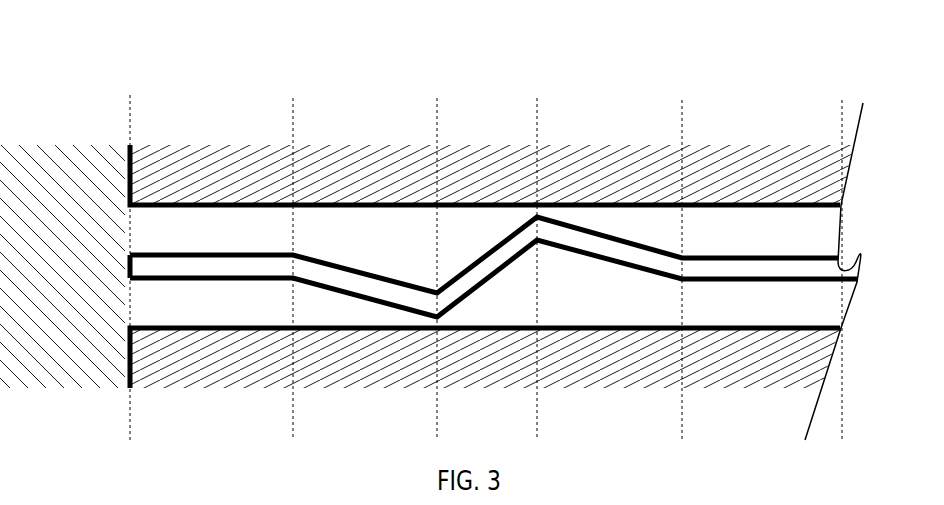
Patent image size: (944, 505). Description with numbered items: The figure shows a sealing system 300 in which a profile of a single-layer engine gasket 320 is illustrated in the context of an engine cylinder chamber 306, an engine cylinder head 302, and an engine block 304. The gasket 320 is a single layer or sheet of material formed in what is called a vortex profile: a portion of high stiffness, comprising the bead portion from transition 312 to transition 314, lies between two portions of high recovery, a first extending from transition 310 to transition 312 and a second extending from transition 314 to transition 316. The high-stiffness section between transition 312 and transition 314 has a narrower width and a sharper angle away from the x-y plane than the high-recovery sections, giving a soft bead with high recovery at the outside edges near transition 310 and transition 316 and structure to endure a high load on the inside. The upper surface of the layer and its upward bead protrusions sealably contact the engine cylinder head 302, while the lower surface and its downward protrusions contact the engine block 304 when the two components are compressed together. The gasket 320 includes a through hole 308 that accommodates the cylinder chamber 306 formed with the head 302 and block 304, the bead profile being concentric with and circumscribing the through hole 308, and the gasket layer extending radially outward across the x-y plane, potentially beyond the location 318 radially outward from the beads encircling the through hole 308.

The sealing system 300 is at (461, 234).
The engine cylinder head 302 is at (491, 147).
The engine block 304 is at (485, 388).
The engine cylinder chamber 306 is at (62, 239).
The through hole 308 is at (169, 257).
The transition 310 is at (332, 258).
The transition 312 is at (476, 258).
The transition 314 is at (576, 257).
The transition 316 is at (722, 258).
The radially outward extent 318 is at (864, 247).
The single-layer engine gasket 320 is at (494, 265).